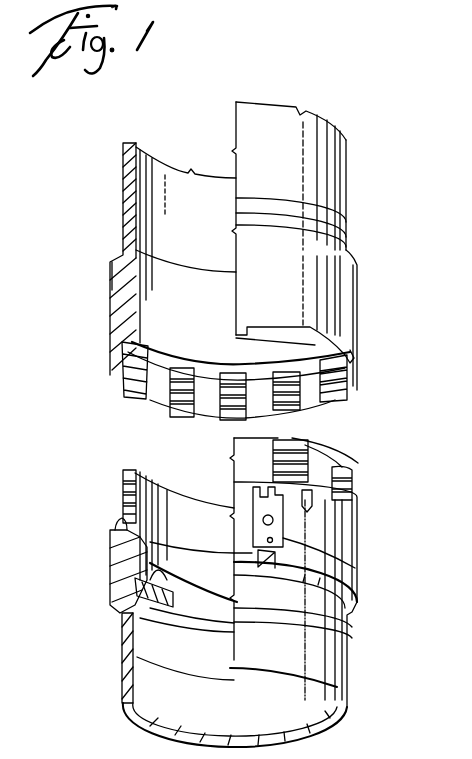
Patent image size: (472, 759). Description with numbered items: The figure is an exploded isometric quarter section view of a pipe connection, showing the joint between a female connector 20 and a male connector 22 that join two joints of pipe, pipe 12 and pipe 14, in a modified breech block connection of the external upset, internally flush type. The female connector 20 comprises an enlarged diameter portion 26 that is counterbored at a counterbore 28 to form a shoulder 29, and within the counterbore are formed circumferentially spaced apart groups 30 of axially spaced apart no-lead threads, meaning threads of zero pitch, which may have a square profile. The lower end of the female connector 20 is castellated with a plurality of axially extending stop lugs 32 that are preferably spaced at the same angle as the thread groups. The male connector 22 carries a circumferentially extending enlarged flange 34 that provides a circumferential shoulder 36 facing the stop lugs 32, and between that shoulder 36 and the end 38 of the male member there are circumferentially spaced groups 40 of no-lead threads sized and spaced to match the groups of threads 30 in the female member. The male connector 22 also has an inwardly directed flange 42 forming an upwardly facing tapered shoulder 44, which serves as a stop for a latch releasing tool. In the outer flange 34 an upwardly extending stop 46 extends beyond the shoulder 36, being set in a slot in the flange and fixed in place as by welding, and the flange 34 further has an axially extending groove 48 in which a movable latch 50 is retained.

The pipe 12 is at (348, 181).
The pipe 14 is at (348, 677).
The female connector 20 is at (362, 283).
The male connector 22 is at (362, 527).
The enlarged diameter portion 26 is at (122, 318).
The counterbore 28 is at (165, 400).
The shoulder 29 is at (170, 362).
The groups of no-lead threads 30 is at (238, 383).
The stop lugs 32 is at (330, 404).
The enlarged flange 34 is at (115, 548).
The circumferential shoulder 36 is at (115, 520).
The end of the male member 38 is at (132, 470).
The groups of no-lead threads 40 is at (300, 440).
The inwardly directed flange 42 is at (169, 606).
The tapered shoulder 44 is at (157, 517).
The stop 46 is at (305, 508).
The groove 48 is at (283, 537).
The latch 50 is at (257, 528).